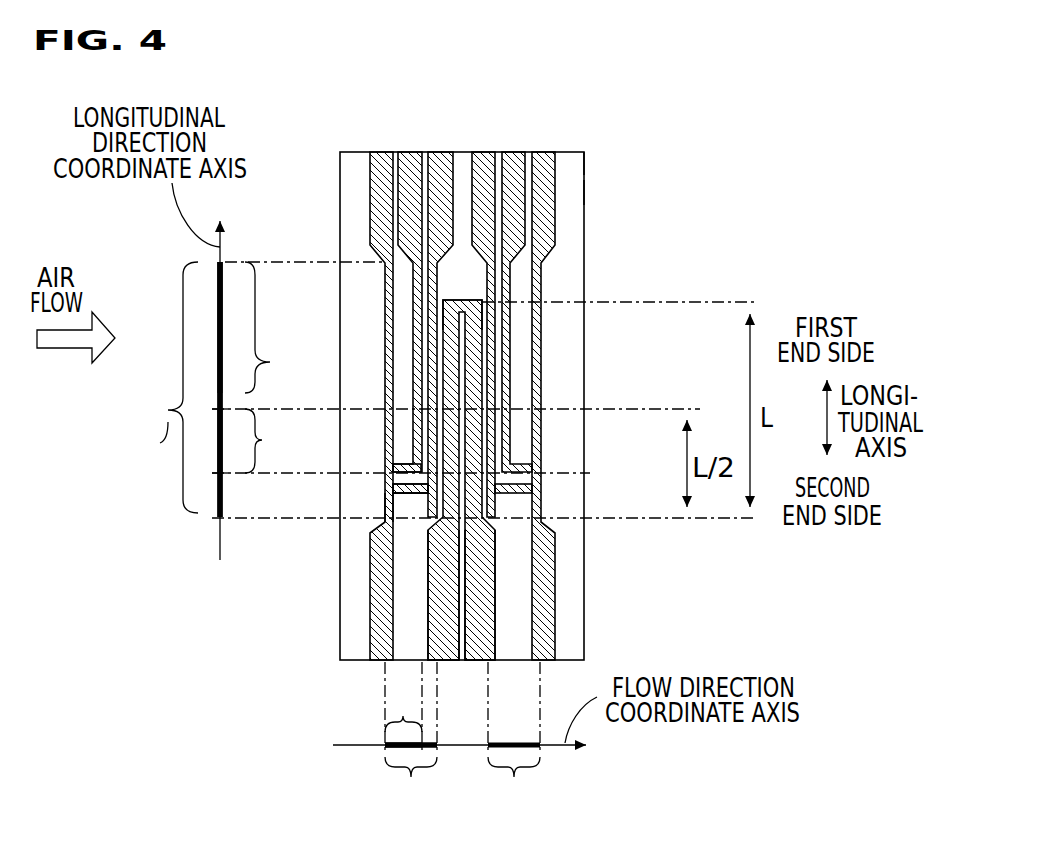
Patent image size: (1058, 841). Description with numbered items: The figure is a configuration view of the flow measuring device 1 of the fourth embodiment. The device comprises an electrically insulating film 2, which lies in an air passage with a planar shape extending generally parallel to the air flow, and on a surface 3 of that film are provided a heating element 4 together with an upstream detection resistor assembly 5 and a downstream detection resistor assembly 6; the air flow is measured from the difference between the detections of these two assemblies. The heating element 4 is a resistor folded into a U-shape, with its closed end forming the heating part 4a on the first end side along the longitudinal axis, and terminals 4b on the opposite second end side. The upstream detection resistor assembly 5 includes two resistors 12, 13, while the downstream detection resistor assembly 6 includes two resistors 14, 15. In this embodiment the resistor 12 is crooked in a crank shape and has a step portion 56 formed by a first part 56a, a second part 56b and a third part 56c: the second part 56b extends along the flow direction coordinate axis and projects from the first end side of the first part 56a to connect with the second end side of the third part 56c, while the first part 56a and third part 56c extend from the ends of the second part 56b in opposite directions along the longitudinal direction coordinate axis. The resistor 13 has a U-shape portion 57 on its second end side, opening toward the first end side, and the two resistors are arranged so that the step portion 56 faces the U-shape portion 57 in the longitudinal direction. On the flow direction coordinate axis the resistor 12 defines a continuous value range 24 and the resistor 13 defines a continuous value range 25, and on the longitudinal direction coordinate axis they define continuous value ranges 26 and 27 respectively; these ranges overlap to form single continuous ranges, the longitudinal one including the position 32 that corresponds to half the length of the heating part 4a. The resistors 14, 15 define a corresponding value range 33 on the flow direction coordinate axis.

The flow measuring device 1 is at (594, 125).
The electrically insulating film 2 is at (585, 163).
The surface 3 is at (573, 192).
The heating element 4 is at (480, 333).
The heating part 4a is at (484, 500).
The terminals 4b is at (447, 662).
The upstream detection resistor assembly 5 is at (383, 295).
The downstream detection resistor assembly 6 is at (546, 357).
The resistor 12 is at (437, 280).
The resistor 13 is at (372, 301).
The resistor 14 is at (487, 283).
The resistor 15 is at (540, 290).
The continuous value range 24 is at (401, 779).
The continuous value range 25 is at (403, 716).
The continuous value range 26 is at (128, 389).
The continuous value range 27 is at (264, 327).
The position 32 is at (222, 409).
The value range 33 is at (514, 779).
The step portion 56 is at (387, 502).
The first part 56a is at (385, 495).
The second part 56b is at (407, 500).
The third part 56c is at (428, 455).
The U-shape portion 57 is at (377, 488).